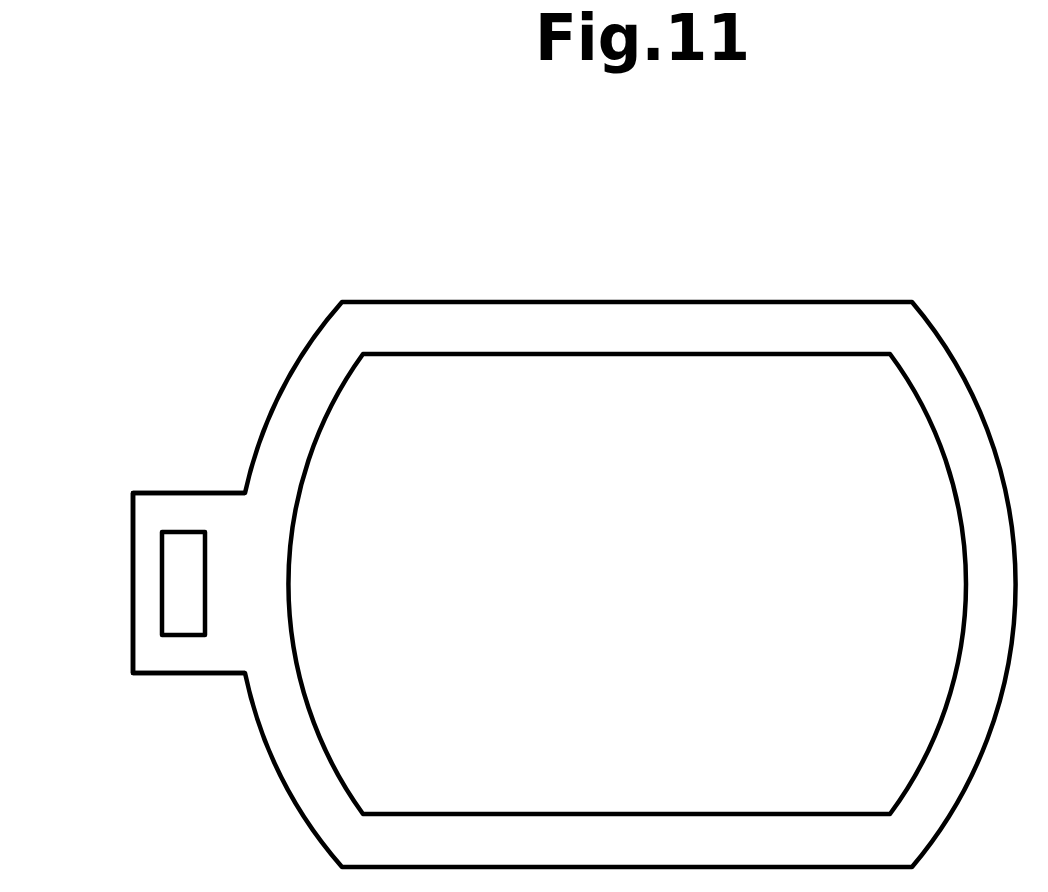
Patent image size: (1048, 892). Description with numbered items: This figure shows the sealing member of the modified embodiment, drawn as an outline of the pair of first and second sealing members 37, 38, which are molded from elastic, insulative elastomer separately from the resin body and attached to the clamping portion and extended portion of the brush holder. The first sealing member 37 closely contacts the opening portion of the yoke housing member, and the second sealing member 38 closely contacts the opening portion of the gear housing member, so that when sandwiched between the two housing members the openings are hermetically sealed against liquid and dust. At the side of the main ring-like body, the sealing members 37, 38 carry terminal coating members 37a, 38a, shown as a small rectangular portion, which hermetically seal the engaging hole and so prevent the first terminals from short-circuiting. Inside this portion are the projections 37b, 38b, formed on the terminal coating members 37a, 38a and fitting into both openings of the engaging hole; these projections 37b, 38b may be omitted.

The first sealing member 37 is at (574, 538).
The second sealing member 38 is at (828, 303).
The terminal coating member 37a is at (149, 527).
The terminal coating member 38a is at (162, 492).
The projection 37b is at (153, 660).
The projection 38b is at (183, 620).